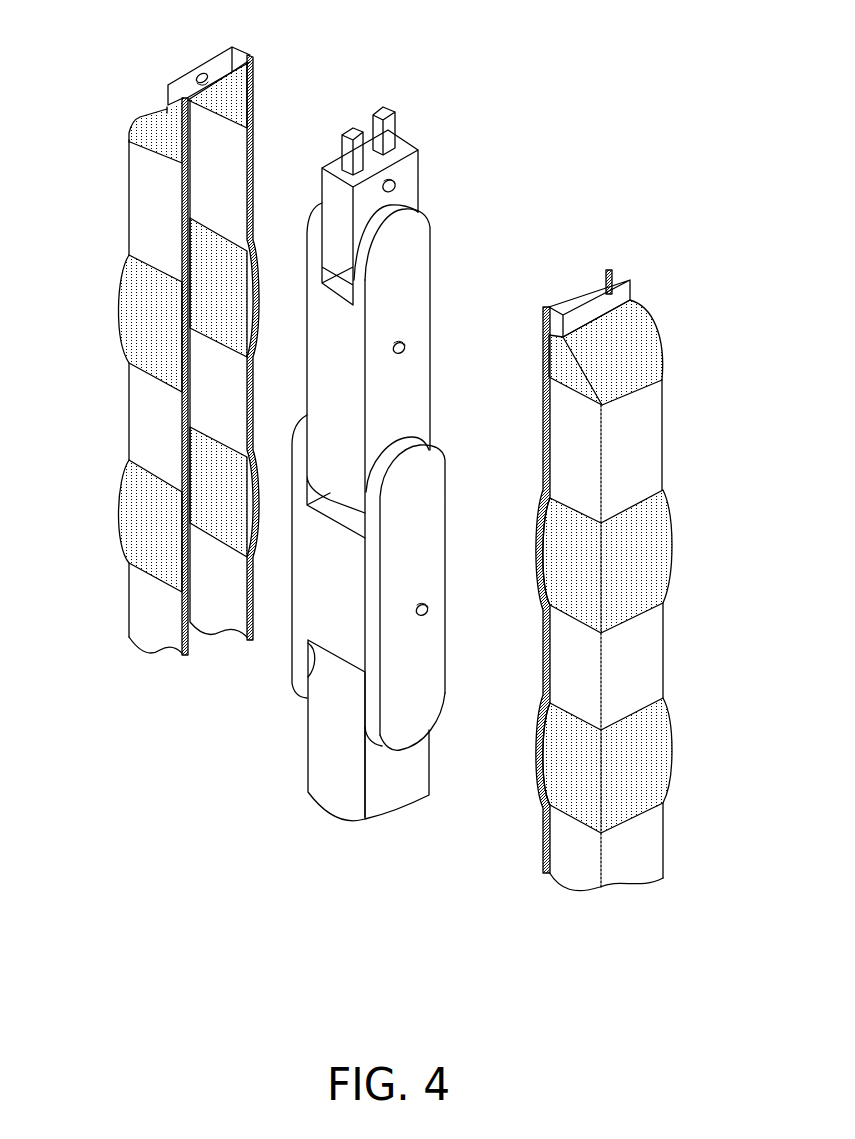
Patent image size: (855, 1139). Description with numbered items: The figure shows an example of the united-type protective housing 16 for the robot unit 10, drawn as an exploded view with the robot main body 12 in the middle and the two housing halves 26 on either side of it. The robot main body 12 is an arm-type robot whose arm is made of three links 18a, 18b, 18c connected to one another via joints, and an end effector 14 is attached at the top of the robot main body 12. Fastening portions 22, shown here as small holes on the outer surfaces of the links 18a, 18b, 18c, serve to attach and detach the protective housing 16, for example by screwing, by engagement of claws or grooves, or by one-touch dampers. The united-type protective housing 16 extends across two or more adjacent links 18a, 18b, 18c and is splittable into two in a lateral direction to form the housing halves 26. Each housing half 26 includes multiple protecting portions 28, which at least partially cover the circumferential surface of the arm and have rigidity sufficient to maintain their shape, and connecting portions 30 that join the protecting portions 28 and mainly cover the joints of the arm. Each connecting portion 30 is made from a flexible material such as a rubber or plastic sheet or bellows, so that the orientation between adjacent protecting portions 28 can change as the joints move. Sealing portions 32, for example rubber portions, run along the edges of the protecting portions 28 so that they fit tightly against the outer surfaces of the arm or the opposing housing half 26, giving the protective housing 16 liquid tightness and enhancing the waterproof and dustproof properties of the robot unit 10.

The robot unit 10 is at (453, 84).
The robot main body 12 is at (273, 722).
The end effector 14 is at (405, 170).
The protective housing 16 is at (118, 78).
The housing half 26 is at (682, 306).
The link 18a is at (415, 272).
The link 18b is at (300, 620).
The link 18c is at (315, 767).
The fastening portion 22 is at (405, 350).
The protecting portion 28 is at (198, 66).
The connecting portion 30 is at (135, 117).
The sealing portion 32 is at (253, 97).